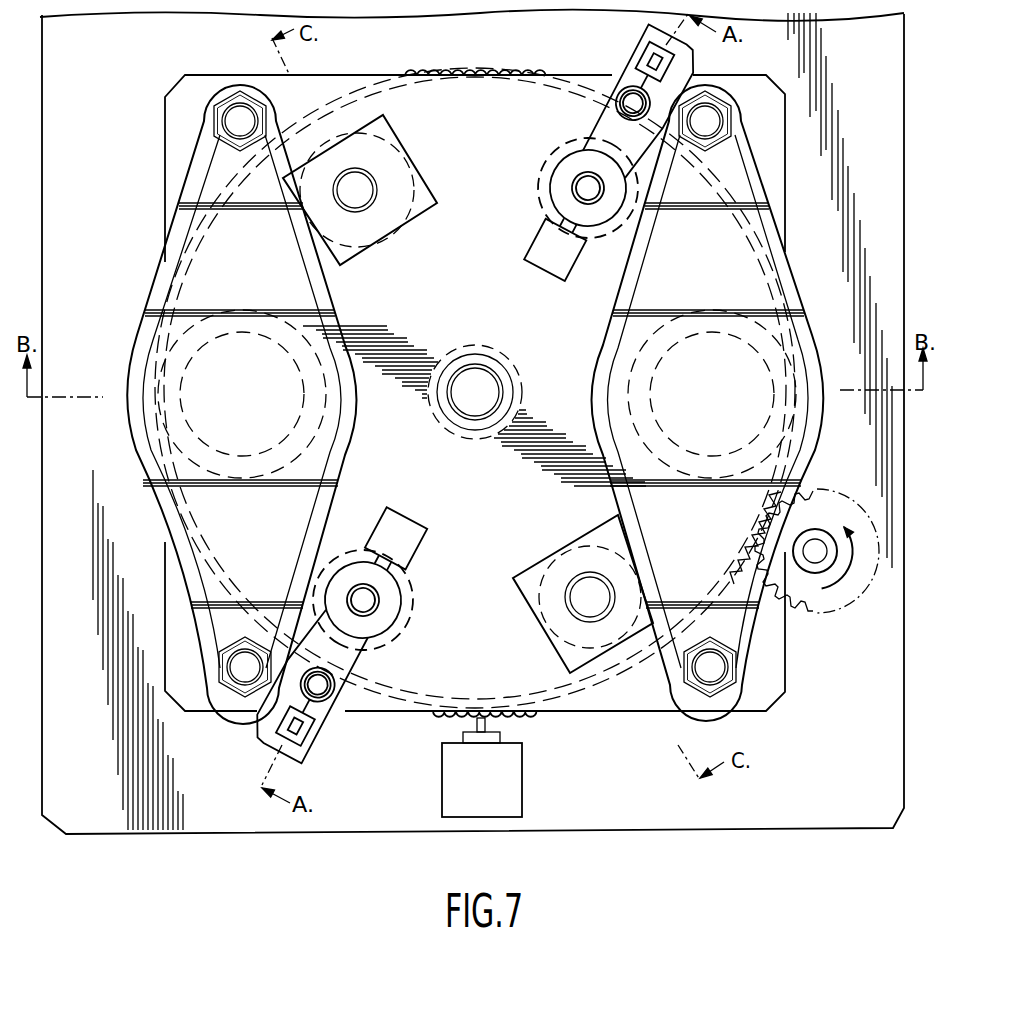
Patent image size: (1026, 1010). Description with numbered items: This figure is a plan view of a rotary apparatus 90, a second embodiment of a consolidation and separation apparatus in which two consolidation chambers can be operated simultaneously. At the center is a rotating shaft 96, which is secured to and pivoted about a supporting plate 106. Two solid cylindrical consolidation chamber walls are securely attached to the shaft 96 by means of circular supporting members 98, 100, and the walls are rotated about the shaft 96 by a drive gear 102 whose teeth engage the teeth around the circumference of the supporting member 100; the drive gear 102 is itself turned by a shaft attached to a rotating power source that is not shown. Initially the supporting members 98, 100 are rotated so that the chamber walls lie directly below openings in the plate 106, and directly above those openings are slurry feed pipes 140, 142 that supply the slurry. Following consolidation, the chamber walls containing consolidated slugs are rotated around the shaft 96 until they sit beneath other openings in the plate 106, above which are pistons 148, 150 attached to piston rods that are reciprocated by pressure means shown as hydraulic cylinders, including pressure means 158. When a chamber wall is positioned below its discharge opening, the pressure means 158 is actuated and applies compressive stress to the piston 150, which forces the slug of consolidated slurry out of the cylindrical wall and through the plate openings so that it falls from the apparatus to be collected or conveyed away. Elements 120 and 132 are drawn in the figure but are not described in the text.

The rotary apparatus 90 is at (322, 848).
The rotating shaft 96 is at (483, 368).
The circular supporting member 98 is at (205, 226).
The circular supporting member 100 is at (192, 243).
The drive gear 102 is at (836, 518).
The supporting plate 106 is at (498, 485).
The left guide plate 120 is at (335, 313).
The right guide plate 132 is at (656, 328).
The slurry feed pipe 140 is at (379, 604).
The slurry feed pipe 142 is at (576, 184).
The piston 148 is at (545, 578).
The piston 150 is at (416, 218).
The pressure means 158 is at (380, 188).